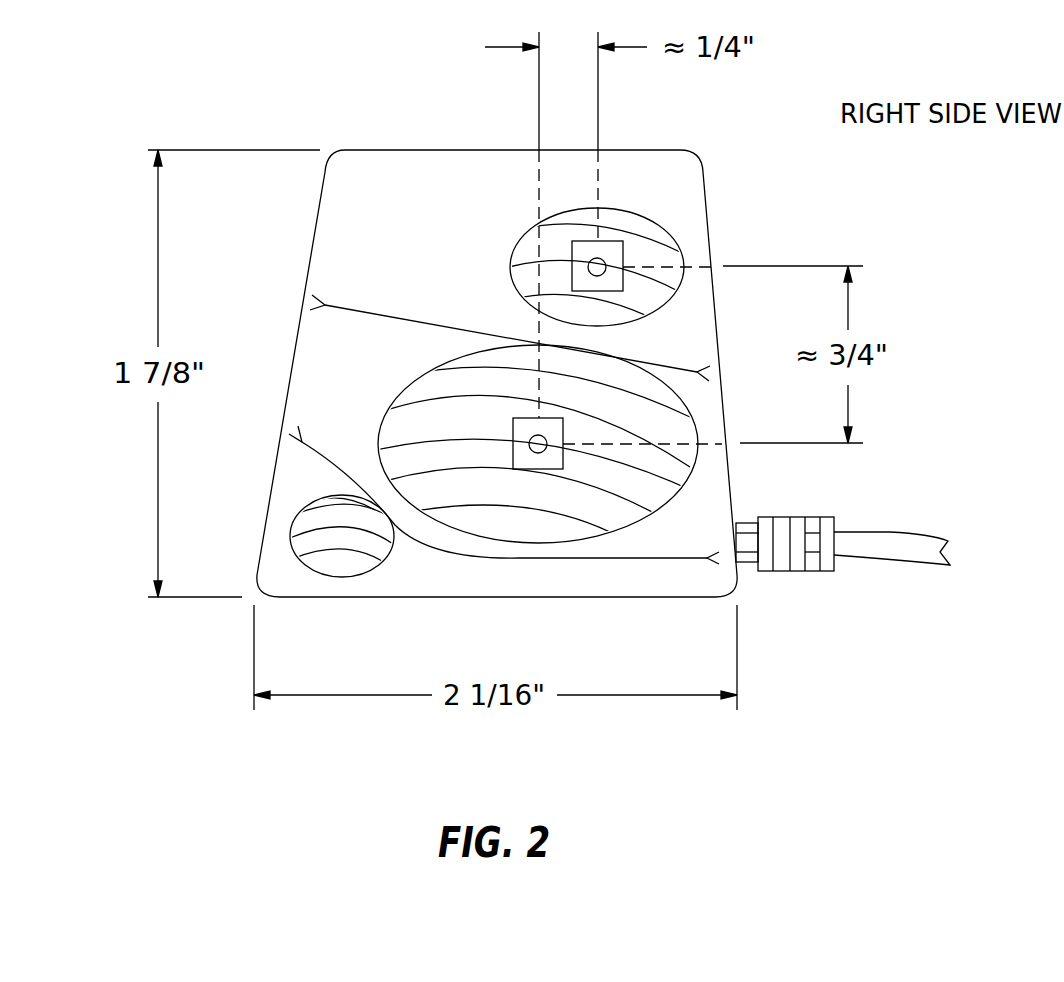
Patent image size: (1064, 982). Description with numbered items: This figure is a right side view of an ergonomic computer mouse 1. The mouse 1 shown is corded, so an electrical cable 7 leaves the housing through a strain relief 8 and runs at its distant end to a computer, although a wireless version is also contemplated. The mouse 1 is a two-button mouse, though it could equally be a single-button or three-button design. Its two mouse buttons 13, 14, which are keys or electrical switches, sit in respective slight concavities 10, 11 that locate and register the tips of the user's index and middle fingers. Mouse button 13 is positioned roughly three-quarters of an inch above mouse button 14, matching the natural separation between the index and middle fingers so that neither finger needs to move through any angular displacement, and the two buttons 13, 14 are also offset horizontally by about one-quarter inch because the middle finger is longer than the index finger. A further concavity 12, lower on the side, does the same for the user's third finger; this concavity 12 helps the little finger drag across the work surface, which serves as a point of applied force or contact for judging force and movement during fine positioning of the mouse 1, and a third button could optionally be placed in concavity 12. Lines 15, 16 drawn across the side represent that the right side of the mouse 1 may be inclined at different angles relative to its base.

The ergonomic computer mouse 1 is at (337, 75).
The electrical cable 7 is at (890, 523).
The strain relief 8 is at (823, 571).
The concavity 10 is at (511, 266).
The concavity 11 is at (380, 433).
The concavity 12 is at (343, 578).
The mouse button 13 is at (617, 240).
The mouse button 14 is at (513, 424).
The line 15 is at (326, 458).
The line 16 is at (365, 312).